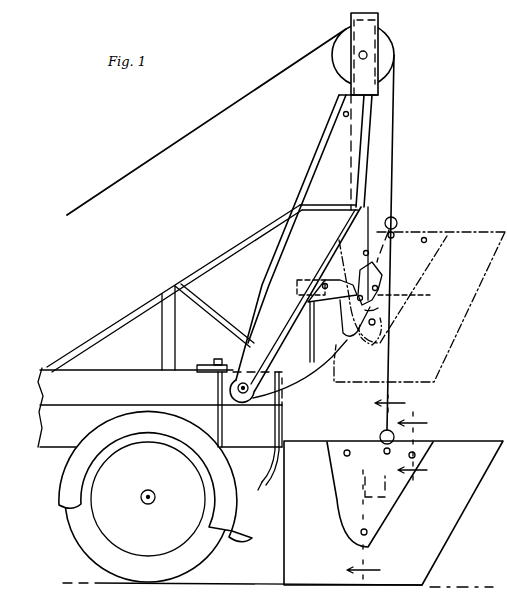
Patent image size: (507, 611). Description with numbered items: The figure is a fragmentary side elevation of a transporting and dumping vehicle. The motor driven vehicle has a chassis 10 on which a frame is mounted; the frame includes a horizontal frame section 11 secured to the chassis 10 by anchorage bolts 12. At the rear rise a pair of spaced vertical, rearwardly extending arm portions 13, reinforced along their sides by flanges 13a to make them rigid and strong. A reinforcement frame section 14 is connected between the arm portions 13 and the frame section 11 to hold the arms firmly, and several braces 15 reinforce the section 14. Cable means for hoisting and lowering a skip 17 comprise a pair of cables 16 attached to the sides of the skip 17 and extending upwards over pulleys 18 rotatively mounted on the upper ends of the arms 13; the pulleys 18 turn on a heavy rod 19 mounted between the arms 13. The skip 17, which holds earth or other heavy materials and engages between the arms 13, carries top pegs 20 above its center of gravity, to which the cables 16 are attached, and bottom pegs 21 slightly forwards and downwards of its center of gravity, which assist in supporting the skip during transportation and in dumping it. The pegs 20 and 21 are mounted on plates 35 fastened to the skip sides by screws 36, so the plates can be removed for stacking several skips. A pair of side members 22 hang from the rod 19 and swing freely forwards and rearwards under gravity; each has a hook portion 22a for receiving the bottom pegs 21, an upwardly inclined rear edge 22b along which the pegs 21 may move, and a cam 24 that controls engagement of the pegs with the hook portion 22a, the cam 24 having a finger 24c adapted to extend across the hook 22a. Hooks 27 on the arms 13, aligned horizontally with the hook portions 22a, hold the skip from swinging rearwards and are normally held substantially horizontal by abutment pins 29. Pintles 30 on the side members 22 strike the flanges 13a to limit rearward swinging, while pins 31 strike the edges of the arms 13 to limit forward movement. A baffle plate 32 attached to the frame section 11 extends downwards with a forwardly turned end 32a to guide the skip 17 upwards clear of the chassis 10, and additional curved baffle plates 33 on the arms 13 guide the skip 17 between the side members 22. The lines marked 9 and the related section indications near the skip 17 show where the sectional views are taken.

The section line 9- 9 is at (382, 486).
The chassis 10 is at (58, 440).
The horizontal frame section 11 is at (100, 374).
The anchorage bolts 12 is at (217, 388).
The arm portions 13 is at (340, 134).
The flanges 13a is at (365, 121).
The reinforcement frame section 14 is at (252, 239).
The braces 15 is at (172, 330).
The cables 16 is at (232, 106).
The skip 17 is at (452, 352).
The pulleys 18 is at (384, 40).
The heavy rod 19 is at (368, 54).
The top pegs 20 is at (395, 230).
The bottom pegs 21 is at (370, 532).
The side members 22 is at (369, 176).
The hook portion 22a is at (418, 291).
The upwardly inclined rear edge 22b is at (352, 346).
The cam 24 is at (372, 280).
The finger 24c is at (374, 315).
The hooks 27 is at (334, 299).
The abutment pins 29 is at (298, 293).
The pintles 30 is at (342, 114).
The pins 31 is at (370, 253).
The baffle plate 32 is at (282, 421).
The forwardly turned end 32a is at (264, 491).
The baffle plates 33 is at (327, 365).
The plates 35 is at (383, 518).
The screws 36 is at (350, 449).